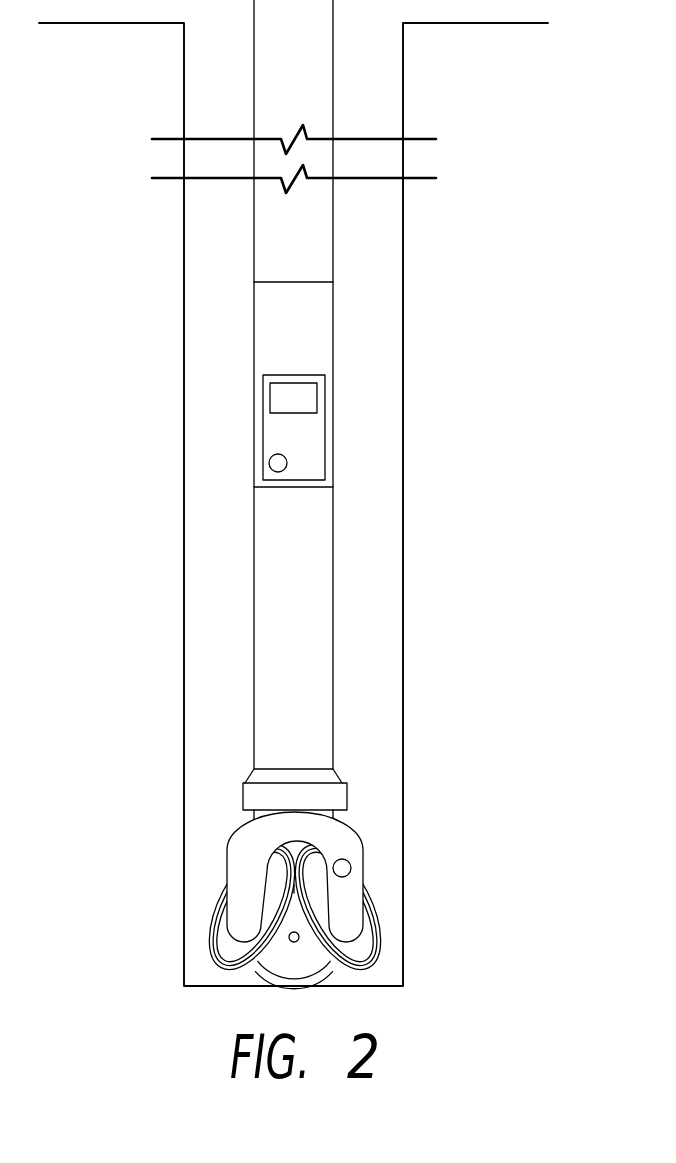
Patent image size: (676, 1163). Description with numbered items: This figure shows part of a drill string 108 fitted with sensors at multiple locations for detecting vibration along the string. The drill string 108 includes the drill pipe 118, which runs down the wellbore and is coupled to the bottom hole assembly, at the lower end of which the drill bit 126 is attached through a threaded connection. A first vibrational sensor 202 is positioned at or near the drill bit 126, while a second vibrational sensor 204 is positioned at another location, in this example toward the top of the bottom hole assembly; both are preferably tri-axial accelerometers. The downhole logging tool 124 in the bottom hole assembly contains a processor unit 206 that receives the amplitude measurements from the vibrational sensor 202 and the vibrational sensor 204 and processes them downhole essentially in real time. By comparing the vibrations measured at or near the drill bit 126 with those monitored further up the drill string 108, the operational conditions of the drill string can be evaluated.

The drill string 108 is at (254, 78).
The drill pipe 118 is at (254, 120).
The downhole logging tool 124 is at (327, 425).
The drill bit 126 is at (235, 838).
The first vibrational sensor 202 is at (346, 862).
The second vibrational sensor 204 is at (269, 460).
The processor unit 206 is at (270, 394).